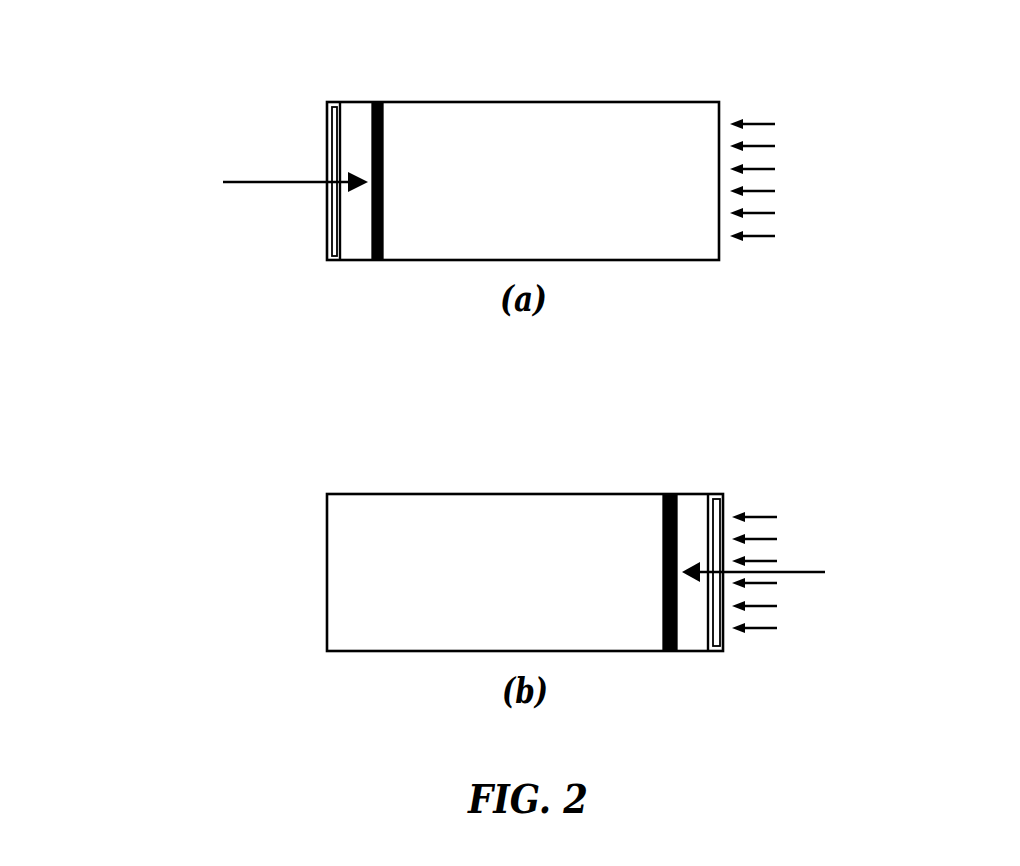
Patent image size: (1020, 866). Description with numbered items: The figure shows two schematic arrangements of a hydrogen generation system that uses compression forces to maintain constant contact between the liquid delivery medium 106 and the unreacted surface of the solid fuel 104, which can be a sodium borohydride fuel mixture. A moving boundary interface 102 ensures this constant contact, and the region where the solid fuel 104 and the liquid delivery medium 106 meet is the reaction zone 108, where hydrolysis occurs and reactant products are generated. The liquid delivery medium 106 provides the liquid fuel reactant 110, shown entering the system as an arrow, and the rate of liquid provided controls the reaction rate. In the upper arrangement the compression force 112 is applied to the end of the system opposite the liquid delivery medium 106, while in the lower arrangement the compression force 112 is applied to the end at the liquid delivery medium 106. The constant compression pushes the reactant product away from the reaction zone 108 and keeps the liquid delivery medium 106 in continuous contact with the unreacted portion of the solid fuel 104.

The moving boundary interface 102 is at (325, 102).
The solid fuel 104 is at (528, 101).
The liquid delivery medium 106 is at (363, 102).
The reaction zone 108 is at (382, 102).
The liquid fuel reactant 110 is at (268, 181).
The compression force 112 is at (757, 122).